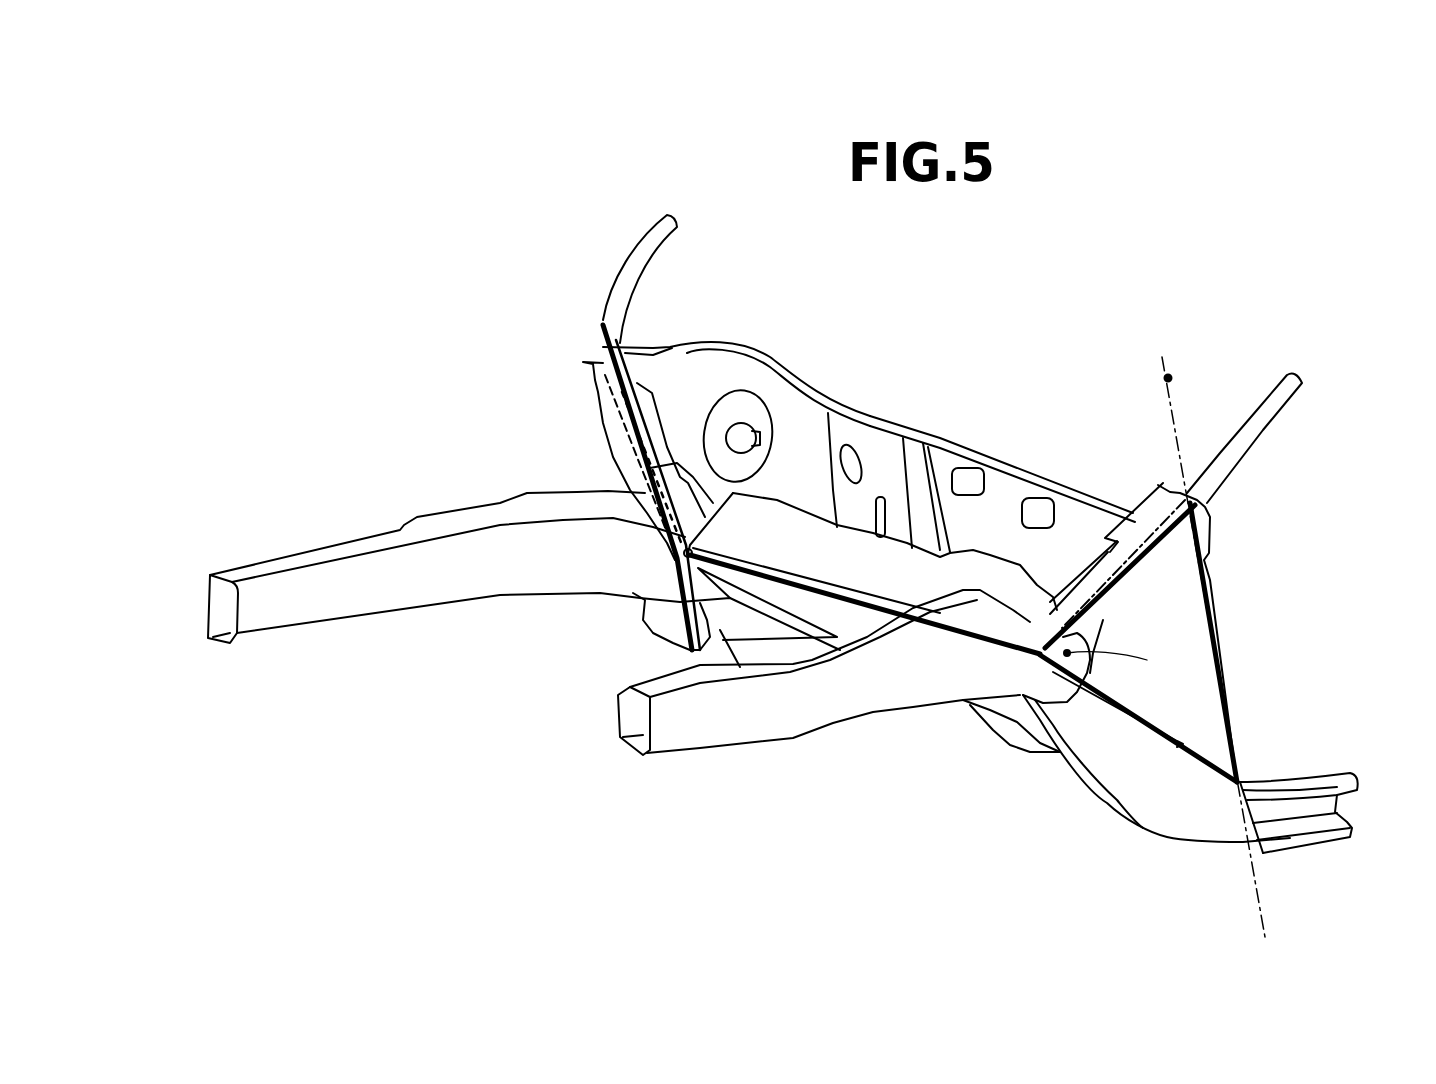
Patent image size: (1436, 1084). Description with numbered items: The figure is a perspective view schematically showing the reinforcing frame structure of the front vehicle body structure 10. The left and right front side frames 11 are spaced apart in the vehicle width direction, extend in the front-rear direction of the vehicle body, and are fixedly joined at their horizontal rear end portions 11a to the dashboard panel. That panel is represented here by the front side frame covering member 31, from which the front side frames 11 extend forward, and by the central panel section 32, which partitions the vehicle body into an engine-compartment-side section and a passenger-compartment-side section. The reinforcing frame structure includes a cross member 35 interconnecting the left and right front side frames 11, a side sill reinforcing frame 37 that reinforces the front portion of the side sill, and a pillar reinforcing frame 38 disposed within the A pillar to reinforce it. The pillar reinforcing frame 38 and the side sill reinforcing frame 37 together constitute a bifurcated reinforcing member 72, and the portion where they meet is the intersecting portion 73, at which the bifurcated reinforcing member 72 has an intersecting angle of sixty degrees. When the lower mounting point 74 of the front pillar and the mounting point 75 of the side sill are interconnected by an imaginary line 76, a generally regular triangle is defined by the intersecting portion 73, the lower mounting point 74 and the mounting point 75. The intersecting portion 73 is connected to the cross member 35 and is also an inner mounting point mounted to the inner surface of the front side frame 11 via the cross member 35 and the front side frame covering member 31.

The front vehicle body structure 10 is at (390, 137).
The front side frame 11 is at (195, 626).
The horizontal rear end portion 11a is at (583, 502).
The front side frame covering member 31 is at (797, 478).
The central panel section 32 is at (938, 404).
The cross member 35 is at (945, 630).
The side sill reinforcing frame 37 is at (1160, 723).
The pillar reinforcing frame 38 is at (1127, 577).
The bifurcated reinforcing member 72 is at (1335, 550).
The intersecting portion 73 is at (1040, 653).
The lower mounting point of the front pillar 74 is at (1188, 493).
The mounting point of the side sill 75 is at (1293, 780).
The imaginary line 76 is at (1168, 378).